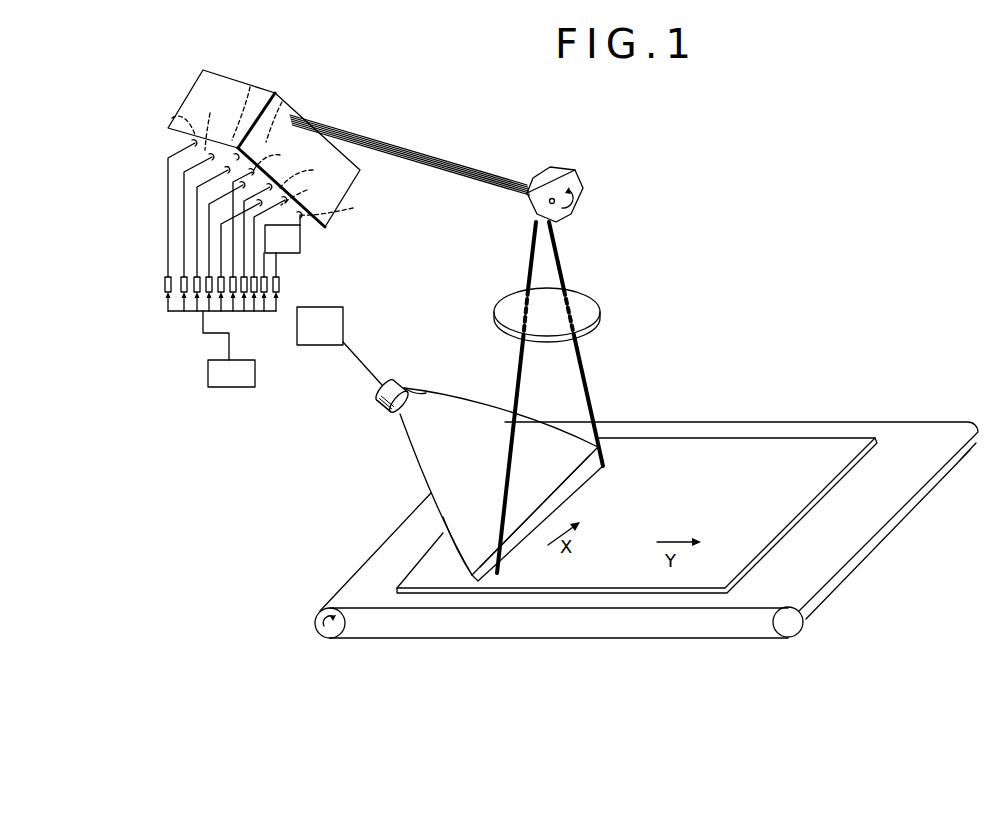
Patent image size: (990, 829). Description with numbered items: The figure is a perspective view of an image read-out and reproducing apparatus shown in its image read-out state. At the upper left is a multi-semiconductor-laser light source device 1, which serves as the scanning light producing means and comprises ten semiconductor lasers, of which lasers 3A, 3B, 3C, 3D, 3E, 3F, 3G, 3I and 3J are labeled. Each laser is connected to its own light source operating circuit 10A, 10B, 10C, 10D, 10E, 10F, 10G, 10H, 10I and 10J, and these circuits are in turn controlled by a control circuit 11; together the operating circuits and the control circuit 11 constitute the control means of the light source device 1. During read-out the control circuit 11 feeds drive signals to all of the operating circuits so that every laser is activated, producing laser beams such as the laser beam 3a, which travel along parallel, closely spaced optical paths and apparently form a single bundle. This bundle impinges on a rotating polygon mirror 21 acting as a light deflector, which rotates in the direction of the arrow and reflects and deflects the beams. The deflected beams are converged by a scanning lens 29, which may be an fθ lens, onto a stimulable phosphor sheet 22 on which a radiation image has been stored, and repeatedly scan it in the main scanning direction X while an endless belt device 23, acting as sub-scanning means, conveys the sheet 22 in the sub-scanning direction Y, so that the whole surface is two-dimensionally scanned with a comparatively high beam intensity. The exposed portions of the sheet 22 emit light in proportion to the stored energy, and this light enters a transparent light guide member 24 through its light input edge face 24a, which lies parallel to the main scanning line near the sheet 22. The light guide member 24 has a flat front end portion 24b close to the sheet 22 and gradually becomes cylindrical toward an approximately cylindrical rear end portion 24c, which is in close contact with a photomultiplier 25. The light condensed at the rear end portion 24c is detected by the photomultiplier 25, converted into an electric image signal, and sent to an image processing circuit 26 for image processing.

The multi-semiconductor-laser light source device 1 is at (301, 74).
The semiconductor laser 3A is at (172, 118).
The semiconductor laser 3B is at (242, 90).
The semiconductor laser 3C is at (206, 121).
The semiconductor laser 3D is at (280, 159).
The semiconductor laser 3E is at (282, 102).
The semiconductor laser 3F is at (306, 191).
The semiconductor laser 3G is at (310, 173).
The semiconductor laser 3I is at (282, 246).
The semiconductor laser 3J is at (337, 208).
The laser beam 3a is at (417, 158).
The light source operating circuit 10A is at (163, 277).
The light source operating circuit 10B is at (190, 312).
The light source operating circuit 10C is at (170, 296).
The light source operating circuit 10D is at (226, 311).
The light source operating circuit 10E is at (200, 311).
The light source operating circuit 10F is at (254, 280).
The light source operating circuit 10G is at (247, 280).
The light source operating circuit 10H is at (276, 311).
The light source operating circuit 10I is at (266, 280).
The light source operating circuit 10J is at (280, 288).
The control circuit 11 is at (238, 387).
The rotating polygon mirror 21 is at (573, 177).
The stimulable phosphor sheet 22 is at (650, 438).
The endless belt device 23 is at (748, 428).
The transparent light guide member 24 is at (428, 447).
The light input edge face 24a is at (486, 568).
The flat front end portion 24b is at (467, 550).
The cylindrical rear end portion 24c is at (416, 405).
The photomultiplier 25 is at (405, 377).
The image processing circuit 26 is at (346, 325).
The scanning lens 29 is at (598, 318).